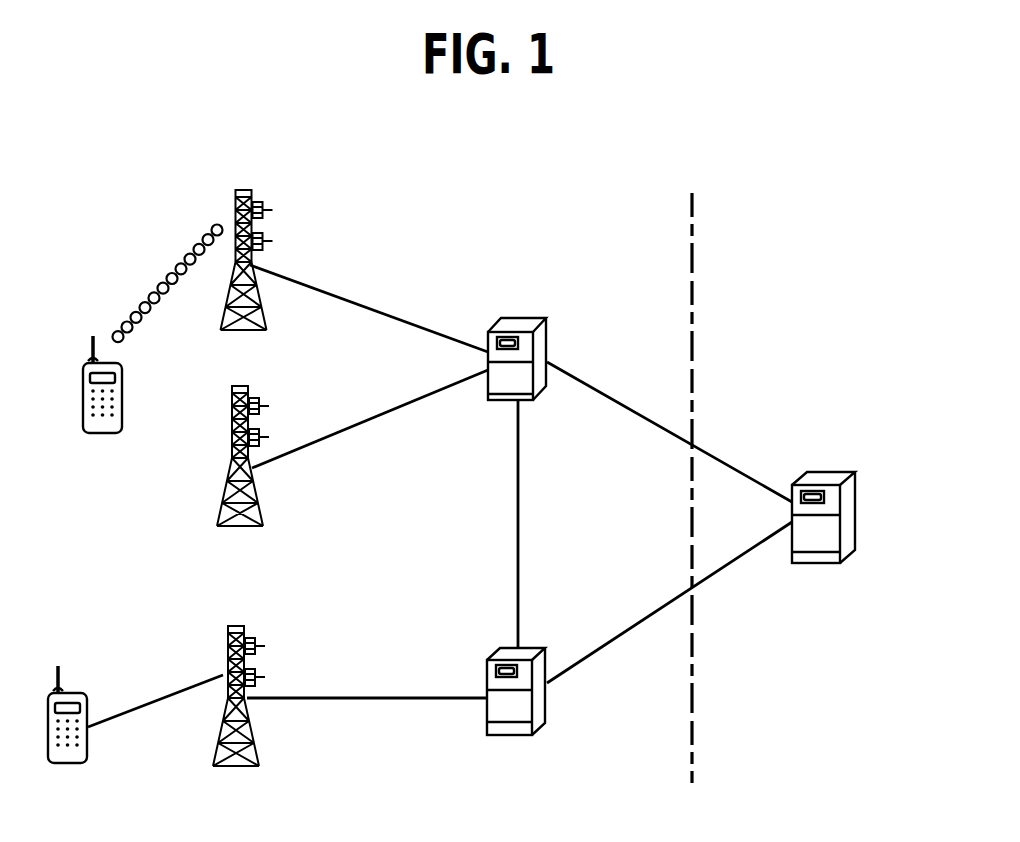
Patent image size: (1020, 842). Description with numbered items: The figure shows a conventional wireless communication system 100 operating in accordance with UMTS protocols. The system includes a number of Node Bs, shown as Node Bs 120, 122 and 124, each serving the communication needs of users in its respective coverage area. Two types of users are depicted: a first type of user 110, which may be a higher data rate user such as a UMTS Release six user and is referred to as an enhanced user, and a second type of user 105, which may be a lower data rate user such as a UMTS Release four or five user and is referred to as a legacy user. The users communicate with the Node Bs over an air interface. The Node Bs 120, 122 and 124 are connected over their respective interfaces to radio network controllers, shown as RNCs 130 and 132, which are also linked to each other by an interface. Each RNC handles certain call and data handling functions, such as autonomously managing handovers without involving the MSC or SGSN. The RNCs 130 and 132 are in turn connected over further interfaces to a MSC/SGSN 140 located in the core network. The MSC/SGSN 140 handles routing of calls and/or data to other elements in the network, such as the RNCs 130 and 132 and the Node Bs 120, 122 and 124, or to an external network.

The wireless communication system 100 is at (484, 207).
The second type of user 105 is at (122, 394).
The first type of user 110 is at (102, 670).
The Node B 120 is at (275, 187).
The Node B 122 is at (283, 395).
The Node B 124 is at (268, 628).
The RNC 130 is at (548, 338).
The RNC 132 is at (531, 647).
The MSC/SGSN 140 is at (825, 472).